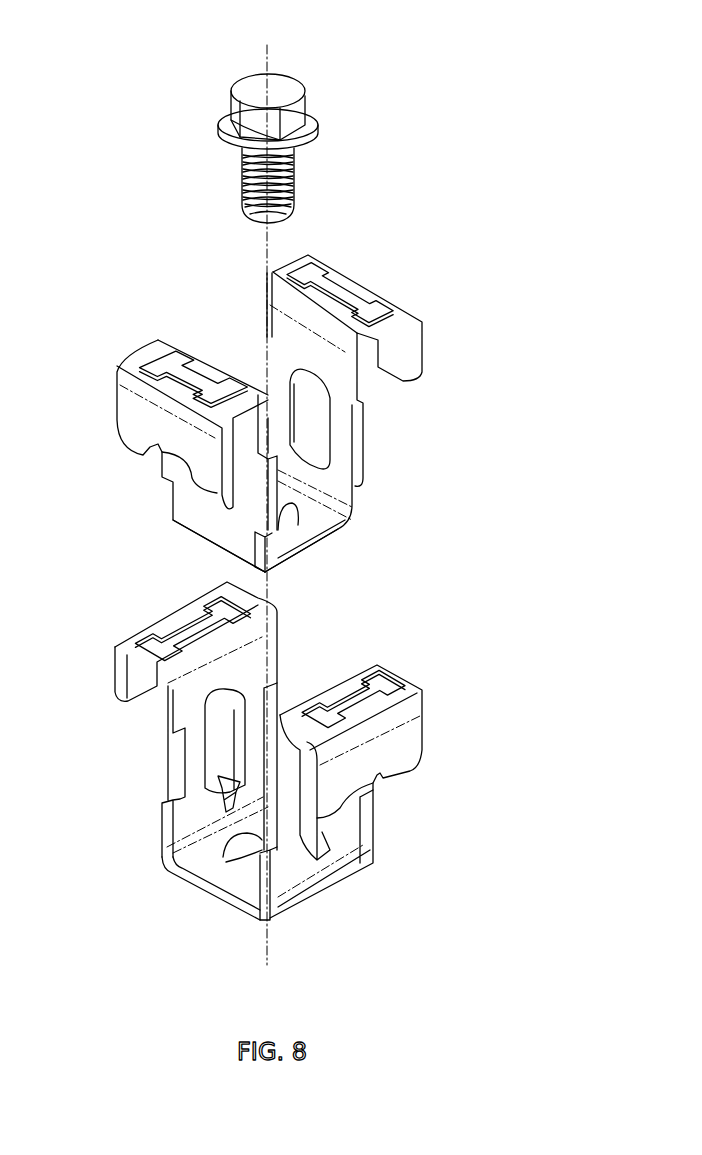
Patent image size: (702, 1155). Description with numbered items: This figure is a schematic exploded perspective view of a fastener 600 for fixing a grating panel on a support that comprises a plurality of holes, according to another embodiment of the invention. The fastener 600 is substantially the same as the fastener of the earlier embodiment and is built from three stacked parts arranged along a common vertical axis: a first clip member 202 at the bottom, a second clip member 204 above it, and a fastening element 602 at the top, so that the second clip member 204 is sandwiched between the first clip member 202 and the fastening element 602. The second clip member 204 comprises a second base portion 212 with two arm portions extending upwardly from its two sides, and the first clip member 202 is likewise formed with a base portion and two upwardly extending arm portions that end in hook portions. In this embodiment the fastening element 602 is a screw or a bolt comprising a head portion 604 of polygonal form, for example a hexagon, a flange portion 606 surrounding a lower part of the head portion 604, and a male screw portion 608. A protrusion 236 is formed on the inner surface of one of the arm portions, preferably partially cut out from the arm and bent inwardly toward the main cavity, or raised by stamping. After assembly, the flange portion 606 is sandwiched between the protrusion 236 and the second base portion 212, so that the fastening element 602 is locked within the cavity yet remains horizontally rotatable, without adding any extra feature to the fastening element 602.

The fastener 600 is at (82, 136).
The fastening element 602 is at (435, 131).
The head portion 604 is at (286, 90).
The flange portion 606 is at (303, 143).
The male screw portion 608 is at (293, 183).
The second clip member 204 is at (480, 488).
The second base portion 212 is at (335, 538).
The first clip member 202 is at (460, 808).
The protrusion 236 is at (212, 782).